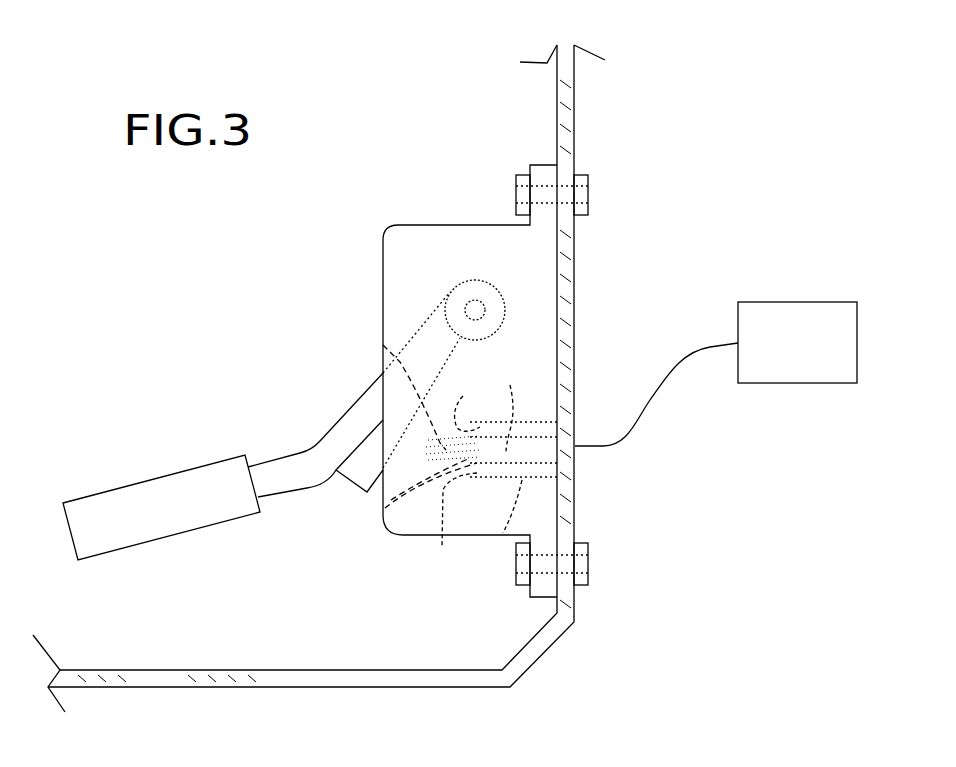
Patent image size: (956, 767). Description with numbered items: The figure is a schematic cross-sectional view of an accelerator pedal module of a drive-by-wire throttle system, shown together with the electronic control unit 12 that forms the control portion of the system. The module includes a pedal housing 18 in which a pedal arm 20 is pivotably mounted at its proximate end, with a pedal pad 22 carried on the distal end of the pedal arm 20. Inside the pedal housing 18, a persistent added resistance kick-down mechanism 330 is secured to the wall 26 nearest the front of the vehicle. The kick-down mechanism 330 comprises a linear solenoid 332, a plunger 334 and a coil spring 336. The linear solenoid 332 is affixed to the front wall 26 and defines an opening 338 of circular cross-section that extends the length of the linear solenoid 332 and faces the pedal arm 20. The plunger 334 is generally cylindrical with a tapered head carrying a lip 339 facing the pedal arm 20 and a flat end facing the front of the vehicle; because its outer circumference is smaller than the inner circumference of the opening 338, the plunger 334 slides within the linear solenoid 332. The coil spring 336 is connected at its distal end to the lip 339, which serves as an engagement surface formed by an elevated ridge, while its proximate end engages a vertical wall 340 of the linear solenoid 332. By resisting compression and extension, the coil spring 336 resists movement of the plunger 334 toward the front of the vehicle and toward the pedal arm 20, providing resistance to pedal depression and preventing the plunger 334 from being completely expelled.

The electronic control unit 12 is at (770, 302).
The pedal housing 18 is at (383, 238).
The pedal arm 20 is at (343, 418).
The pedal pad 22 is at (150, 480).
The wall 26 is at (575, 492).
The persistent added resistance kick-down mechanism 330 is at (548, 411).
The linear solenoid 332 is at (503, 533).
The plunger 334 is at (510, 385).
The coil spring 336 is at (380, 350).
The opening 338 is at (383, 513).
The lip 339 is at (383, 495).
The vertical wall 340 is at (463, 396).